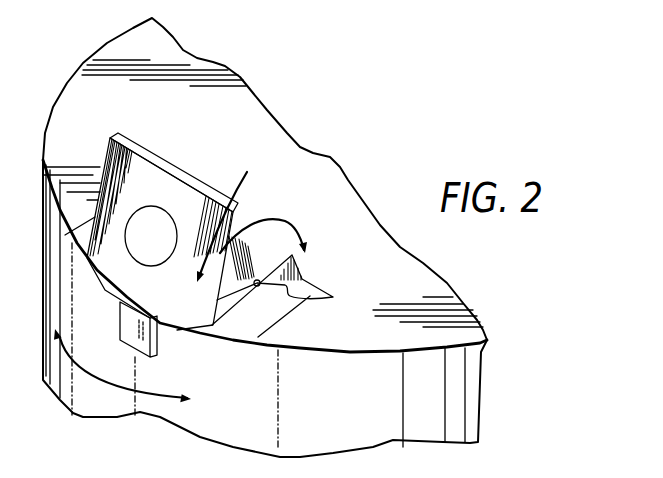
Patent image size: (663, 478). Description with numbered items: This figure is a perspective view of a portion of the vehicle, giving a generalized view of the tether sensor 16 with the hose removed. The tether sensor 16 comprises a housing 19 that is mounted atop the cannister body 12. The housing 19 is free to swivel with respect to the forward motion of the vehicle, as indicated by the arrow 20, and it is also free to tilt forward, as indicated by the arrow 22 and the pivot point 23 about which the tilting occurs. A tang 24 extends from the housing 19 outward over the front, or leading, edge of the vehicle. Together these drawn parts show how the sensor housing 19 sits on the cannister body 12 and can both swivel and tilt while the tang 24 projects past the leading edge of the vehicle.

The cannister body 12 is at (153, 116).
The tether sensor 16 is at (197, 166).
The housing 19 is at (248, 178).
The arrow 20 is at (150, 388).
The arrow 22 is at (286, 214).
The pivot point 23 is at (333, 297).
The tang 24 is at (127, 328).